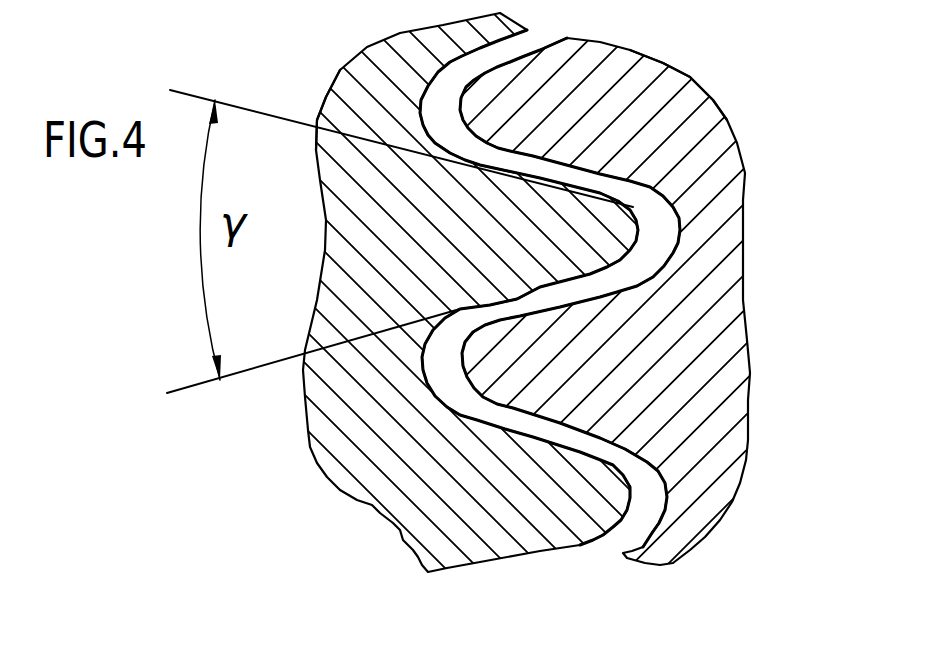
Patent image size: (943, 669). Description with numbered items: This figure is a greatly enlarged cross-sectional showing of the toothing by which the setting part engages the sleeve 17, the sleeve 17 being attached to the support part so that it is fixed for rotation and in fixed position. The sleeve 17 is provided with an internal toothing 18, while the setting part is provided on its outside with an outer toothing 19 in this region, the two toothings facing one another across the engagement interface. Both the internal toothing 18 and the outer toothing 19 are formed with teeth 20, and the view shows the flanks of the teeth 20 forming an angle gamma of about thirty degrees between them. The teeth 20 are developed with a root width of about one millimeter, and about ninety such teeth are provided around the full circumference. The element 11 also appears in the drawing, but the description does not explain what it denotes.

The first sealing ring body 11 is at (390, 455).
The sleeve 17 is at (693, 476).
The internal toothing 18 is at (703, 75).
The outer toothing 19 is at (315, 112).
The teeth 20 is at (488, 362).